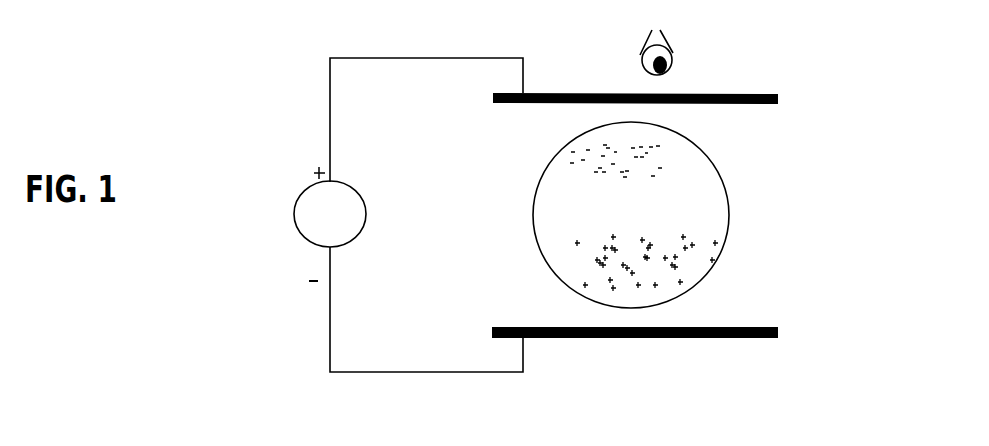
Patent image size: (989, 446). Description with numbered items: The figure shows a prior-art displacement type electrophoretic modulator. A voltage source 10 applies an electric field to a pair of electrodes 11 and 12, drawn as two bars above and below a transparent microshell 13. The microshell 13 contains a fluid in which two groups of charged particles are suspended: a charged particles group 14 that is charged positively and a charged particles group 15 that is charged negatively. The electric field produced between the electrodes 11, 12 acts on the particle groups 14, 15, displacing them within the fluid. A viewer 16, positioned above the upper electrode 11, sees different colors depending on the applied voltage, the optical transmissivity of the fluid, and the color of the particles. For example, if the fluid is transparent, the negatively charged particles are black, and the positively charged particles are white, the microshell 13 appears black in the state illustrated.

The voltage source 10 is at (292, 223).
The electrode 11 is at (778, 105).
The electrode 12 is at (768, 318).
The transparent microshell 13 is at (537, 185).
The charged particles group 14 is at (712, 250).
The charged particles group 15 is at (667, 160).
The viewer 16 is at (685, 48).